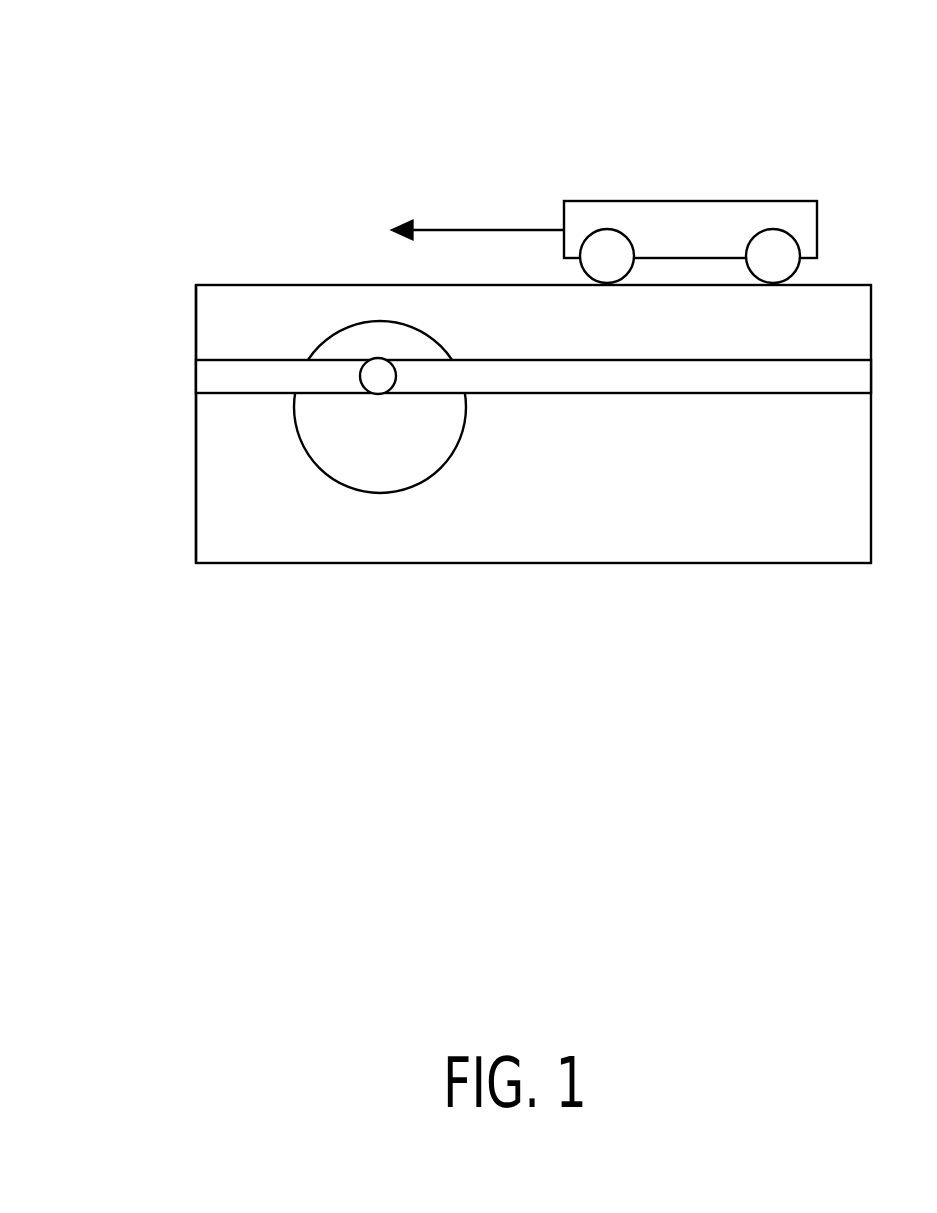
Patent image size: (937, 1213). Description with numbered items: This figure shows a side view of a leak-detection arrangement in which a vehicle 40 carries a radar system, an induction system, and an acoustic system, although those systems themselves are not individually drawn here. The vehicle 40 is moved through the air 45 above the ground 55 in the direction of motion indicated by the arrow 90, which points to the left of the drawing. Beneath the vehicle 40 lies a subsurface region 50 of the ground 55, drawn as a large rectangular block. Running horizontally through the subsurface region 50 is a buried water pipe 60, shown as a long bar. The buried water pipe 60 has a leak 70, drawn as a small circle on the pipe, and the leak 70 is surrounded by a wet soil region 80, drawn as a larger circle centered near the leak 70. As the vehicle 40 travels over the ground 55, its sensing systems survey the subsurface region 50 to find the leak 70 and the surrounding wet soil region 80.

The vehicle 40 is at (690, 230).
The air 45 is at (255, 237).
The subsurface region 50 is at (596, 476).
The ground 55 is at (196, 507).
The buried water pipe 60 is at (705, 376).
The leak 70 is at (379, 378).
The wet soil region 80 is at (367, 455).
The arrow 90 is at (455, 212).